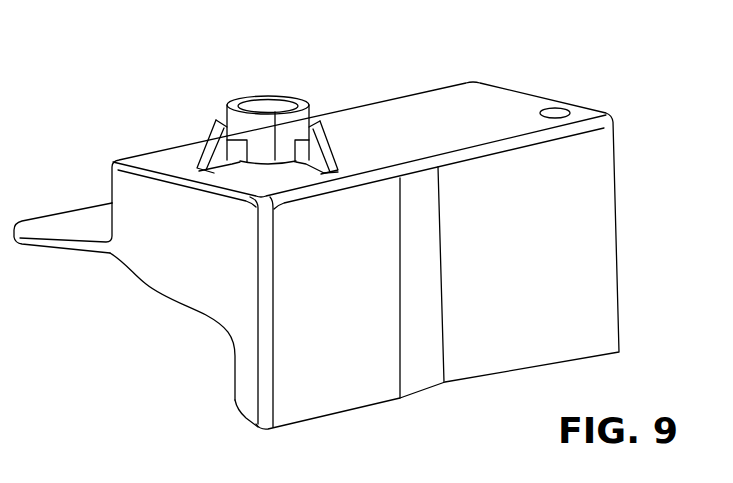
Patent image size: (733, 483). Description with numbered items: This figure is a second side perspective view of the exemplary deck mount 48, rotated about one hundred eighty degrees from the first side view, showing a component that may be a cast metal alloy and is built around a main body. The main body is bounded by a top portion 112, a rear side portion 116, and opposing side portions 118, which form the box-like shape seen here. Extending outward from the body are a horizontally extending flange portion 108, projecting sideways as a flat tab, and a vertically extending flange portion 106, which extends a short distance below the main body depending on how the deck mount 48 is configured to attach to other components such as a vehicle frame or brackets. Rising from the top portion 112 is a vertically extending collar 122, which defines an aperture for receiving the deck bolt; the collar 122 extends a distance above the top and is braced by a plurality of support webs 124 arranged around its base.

The deck mount 48 is at (628, 128).
The vertically extending flange portion 106 is at (245, 397).
The horizontally extending flange portion 108 is at (66, 222).
The top portion 112 is at (400, 108).
The rear side portion 116 is at (592, 222).
The opposing side portions 118 is at (167, 275).
The vertically extending collar 122 is at (263, 97).
The support webs 124 is at (226, 156).